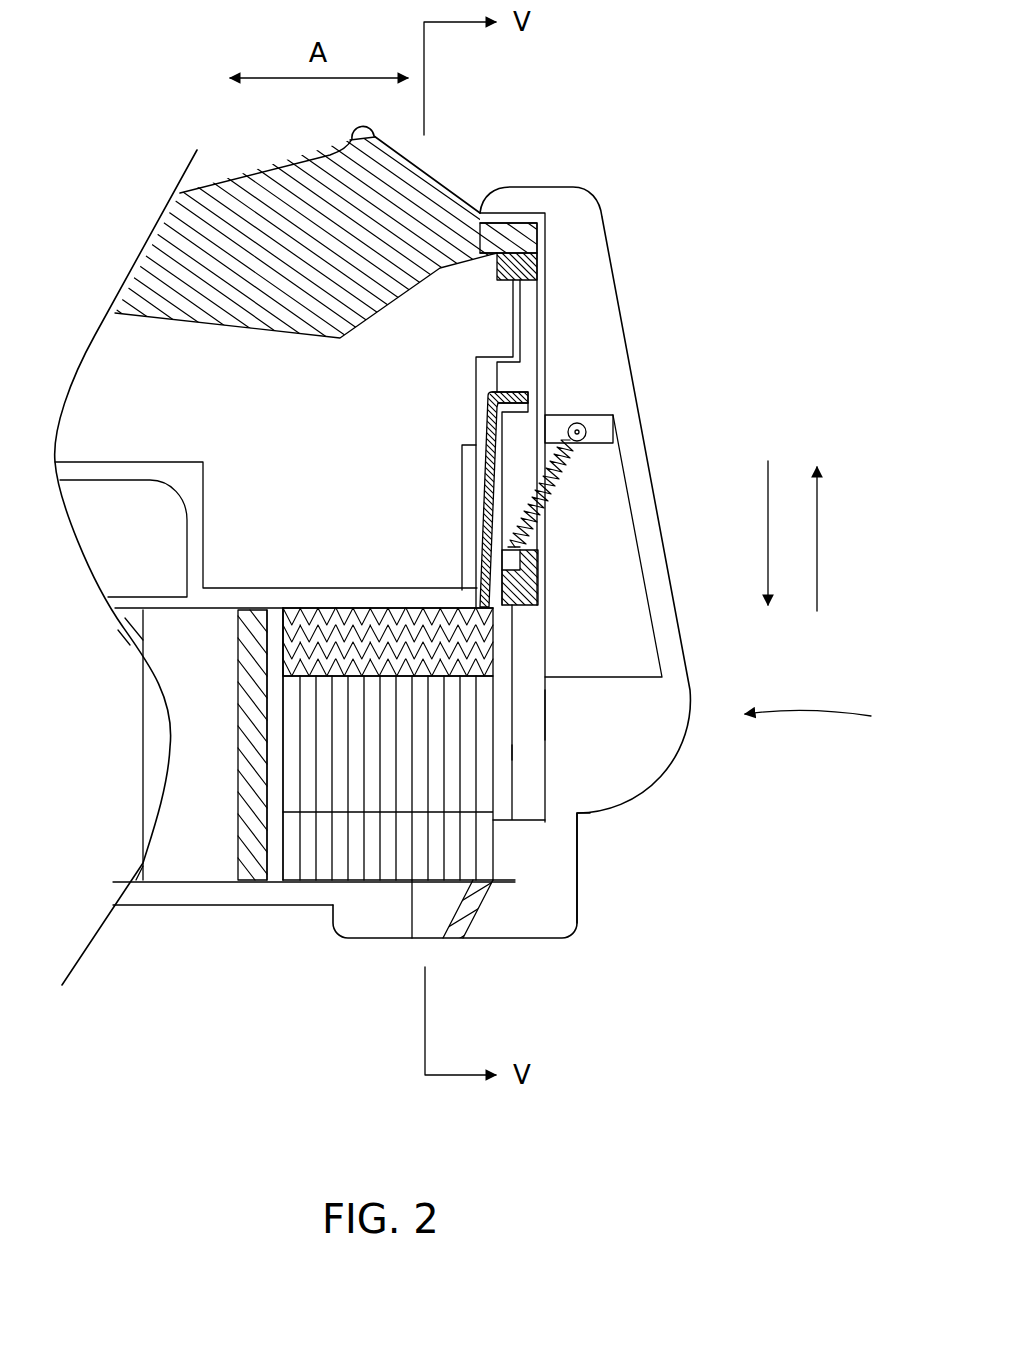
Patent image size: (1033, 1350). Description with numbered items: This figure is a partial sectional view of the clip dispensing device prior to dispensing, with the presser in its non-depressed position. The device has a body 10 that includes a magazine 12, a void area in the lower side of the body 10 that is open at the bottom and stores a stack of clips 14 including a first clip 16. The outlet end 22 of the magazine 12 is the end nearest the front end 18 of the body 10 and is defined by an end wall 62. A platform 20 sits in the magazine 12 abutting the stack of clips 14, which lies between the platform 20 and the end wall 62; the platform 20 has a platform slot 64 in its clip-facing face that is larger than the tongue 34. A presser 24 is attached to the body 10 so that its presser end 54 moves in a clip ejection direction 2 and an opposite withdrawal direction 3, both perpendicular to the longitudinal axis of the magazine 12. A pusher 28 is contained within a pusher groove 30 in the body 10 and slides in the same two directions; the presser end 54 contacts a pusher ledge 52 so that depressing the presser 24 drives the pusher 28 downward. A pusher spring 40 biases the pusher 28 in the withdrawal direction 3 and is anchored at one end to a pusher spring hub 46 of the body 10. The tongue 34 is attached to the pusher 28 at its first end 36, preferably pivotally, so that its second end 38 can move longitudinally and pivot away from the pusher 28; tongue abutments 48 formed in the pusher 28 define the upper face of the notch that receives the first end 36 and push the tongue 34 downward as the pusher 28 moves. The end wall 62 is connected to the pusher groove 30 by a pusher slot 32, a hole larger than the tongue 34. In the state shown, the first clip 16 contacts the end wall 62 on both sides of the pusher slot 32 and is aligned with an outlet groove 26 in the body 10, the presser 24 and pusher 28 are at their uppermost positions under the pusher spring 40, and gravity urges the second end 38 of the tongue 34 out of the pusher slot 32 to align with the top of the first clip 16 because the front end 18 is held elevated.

The body 10 is at (622, 316).
The magazine 12 is at (143, 910).
The stack of clips 14 is at (333, 850).
The first clip 16 is at (483, 850).
The front end 18 is at (829, 717).
The platform 20 is at (247, 880).
The outlet end 22 is at (515, 880).
The presser 24 is at (420, 170).
The outlet groove 26 is at (465, 932).
The pusher 28 is at (530, 310).
The pusher groove 30 is at (545, 703).
The pusher slot 32 is at (502, 752).
The tongue 34 is at (488, 462).
The first end 36 is at (510, 393).
The second end 38 is at (477, 603).
The pusher spring 40 is at (550, 485).
The pusher spring hub 46 is at (586, 432).
The tongue abutments 48 is at (507, 370).
The pusher ledge 52 is at (497, 265).
The presser end 54 is at (520, 213).
The end wall 62 is at (480, 635).
The platform slot 64 is at (277, 870).
The clip ejection direction 2 is at (750, 533).
The withdrawal direction 3 is at (833, 539).